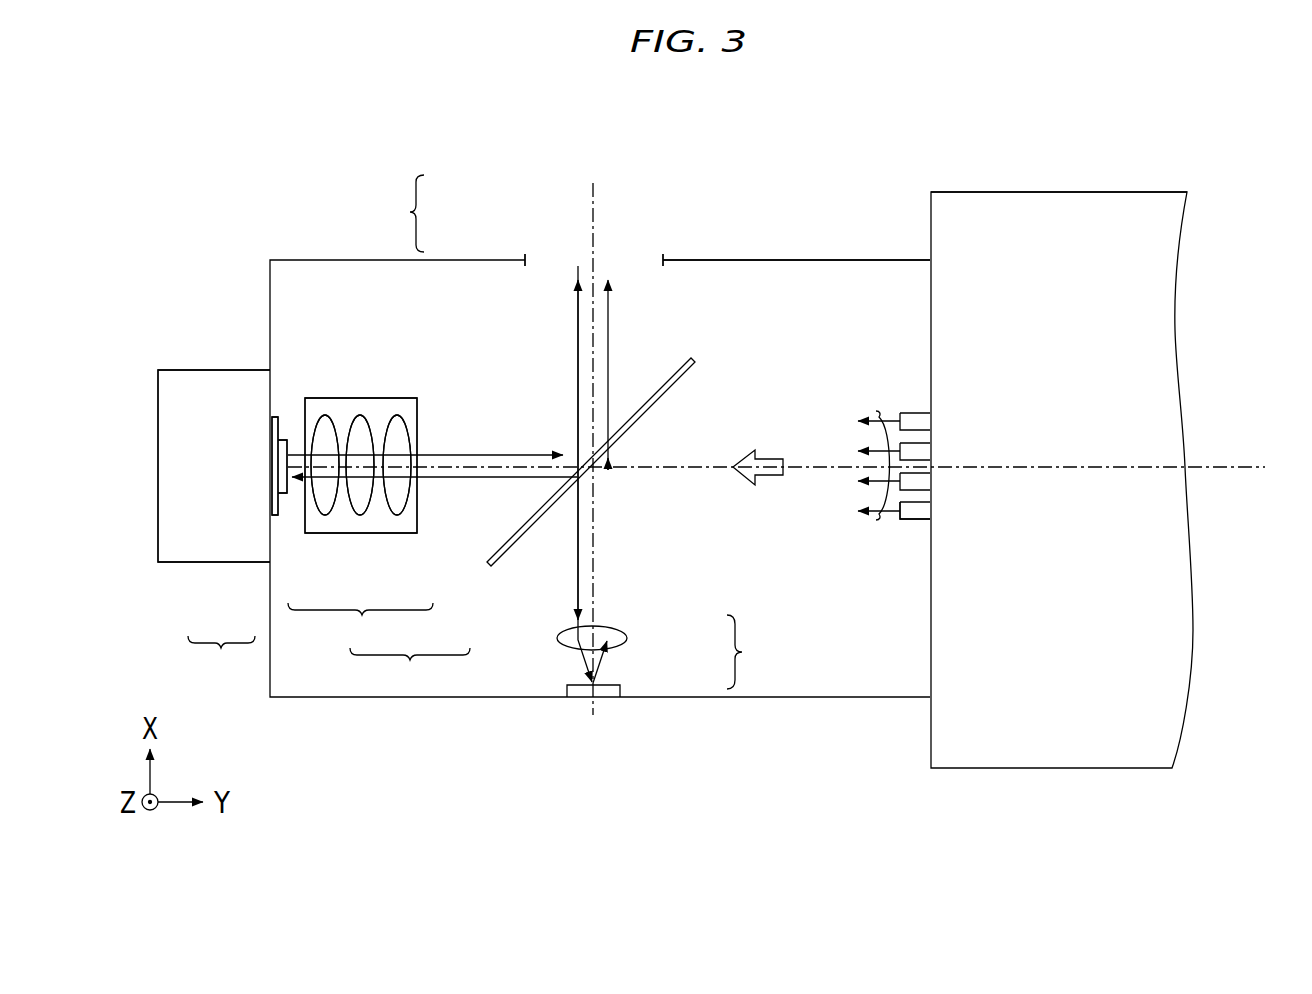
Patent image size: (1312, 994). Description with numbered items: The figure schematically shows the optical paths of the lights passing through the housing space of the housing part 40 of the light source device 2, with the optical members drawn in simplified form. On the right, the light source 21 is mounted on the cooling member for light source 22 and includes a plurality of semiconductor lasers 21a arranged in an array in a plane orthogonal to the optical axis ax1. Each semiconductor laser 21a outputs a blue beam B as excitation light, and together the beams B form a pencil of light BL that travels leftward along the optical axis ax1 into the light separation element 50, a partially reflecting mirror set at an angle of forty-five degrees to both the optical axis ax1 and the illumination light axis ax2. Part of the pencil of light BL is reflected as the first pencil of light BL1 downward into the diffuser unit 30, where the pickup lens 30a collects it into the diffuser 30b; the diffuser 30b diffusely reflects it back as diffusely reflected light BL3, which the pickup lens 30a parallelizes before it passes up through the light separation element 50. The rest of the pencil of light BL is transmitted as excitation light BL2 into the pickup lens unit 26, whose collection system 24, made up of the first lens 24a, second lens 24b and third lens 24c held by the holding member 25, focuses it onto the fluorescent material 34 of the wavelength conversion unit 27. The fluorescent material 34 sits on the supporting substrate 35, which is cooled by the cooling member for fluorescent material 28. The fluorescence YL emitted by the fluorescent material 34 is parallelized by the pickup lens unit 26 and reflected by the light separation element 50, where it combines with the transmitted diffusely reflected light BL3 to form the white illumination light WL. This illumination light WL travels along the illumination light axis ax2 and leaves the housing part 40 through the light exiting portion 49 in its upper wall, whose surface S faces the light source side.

The light source device 2 is at (968, 154).
The light source 21 is at (917, 398).
The semiconductor laser 21a is at (916, 512).
The cooling member for light source 22 is at (996, 774).
The collection system 24 is at (360, 535).
The first lens 24a is at (397, 515).
The second lens 24b is at (360, 515).
The third lens 24c is at (325, 515).
The holding member 25 is at (417, 535).
The pickup lens unit 26 is at (387, 547).
The wavelength conversion unit 27 is at (237, 551).
The cooling member for fluorescent material 28 is at (156, 455).
The diffuser unit 30 is at (237, 330).
The pickup lens 30a is at (627, 638).
The diffuser 30b is at (622, 690).
The fluorescent material 34 is at (284, 492).
The supporting substrate 35 is at (270, 487).
The housing part 40 is at (853, 700).
The light exiting portion 49 is at (663, 260).
The light separation element 50 is at (657, 398).
The top surface S is at (830, 295).
The blue beam B is at (850, 419).
The pencil of light BL is at (765, 458).
The first pencil of light BL1 is at (574, 607).
The excitation light BL2 is at (443, 480).
The diffusely reflected light BL3 is at (612, 548).
The fluorescence YL is at (447, 453).
The illumination light WL is at (402, 213).
The optical axis ax1 is at (1238, 467).
The illumination light axis ax2 is at (598, 200).